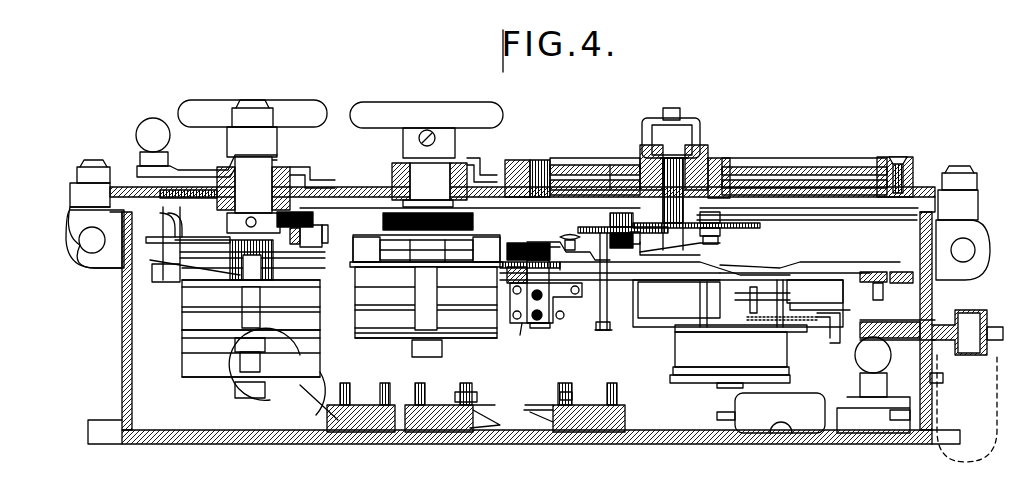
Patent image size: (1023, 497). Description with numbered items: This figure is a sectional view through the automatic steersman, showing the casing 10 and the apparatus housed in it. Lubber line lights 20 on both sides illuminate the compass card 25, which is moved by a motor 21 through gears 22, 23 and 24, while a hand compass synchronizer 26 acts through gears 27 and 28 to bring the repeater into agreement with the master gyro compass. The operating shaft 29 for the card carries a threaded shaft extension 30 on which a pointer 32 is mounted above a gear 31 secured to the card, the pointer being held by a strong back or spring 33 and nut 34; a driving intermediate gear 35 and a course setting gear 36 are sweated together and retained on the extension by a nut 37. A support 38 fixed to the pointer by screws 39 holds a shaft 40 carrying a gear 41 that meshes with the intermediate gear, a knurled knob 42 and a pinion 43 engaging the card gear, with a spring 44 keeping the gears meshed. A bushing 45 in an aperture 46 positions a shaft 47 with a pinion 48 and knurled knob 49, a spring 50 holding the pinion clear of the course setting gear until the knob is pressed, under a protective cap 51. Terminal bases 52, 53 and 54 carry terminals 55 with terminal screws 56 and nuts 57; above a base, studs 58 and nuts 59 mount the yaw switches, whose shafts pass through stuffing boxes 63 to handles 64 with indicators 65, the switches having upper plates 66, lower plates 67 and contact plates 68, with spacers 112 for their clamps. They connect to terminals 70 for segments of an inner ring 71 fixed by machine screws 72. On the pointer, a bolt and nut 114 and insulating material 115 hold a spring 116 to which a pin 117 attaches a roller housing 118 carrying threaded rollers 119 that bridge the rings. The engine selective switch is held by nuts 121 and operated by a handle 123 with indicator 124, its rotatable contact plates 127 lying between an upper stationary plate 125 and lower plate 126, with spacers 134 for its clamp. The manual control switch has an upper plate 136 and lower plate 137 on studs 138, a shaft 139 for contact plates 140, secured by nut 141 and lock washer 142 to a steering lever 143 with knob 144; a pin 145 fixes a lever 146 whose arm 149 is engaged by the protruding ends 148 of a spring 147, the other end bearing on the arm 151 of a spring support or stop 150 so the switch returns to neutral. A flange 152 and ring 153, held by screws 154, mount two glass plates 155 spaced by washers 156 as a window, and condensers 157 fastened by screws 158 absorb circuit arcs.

The casing 10 is at (925, 285).
The lubber line lights 20 is at (882, 368).
The motor 21 is at (788, 350).
The gear 22 is at (818, 295).
The gear 23 is at (772, 305).
The gear 24 is at (772, 296).
The compass card 25 is at (866, 272).
The hand compass synchronizer 26 is at (931, 386).
The gear 27 is at (840, 316).
The gear 28 is at (808, 333).
The operating shaft 29 is at (700, 305).
The shaft extension 30 is at (720, 233).
The gear 31 is at (780, 262).
The pointer 32 is at (833, 262).
The strong back or spring 33 is at (690, 250).
The nut 34 is at (720, 242).
The driving intermediate gear 35 is at (750, 226).
The course setting gear 36 is at (742, 218).
The nut 37 is at (720, 215).
The support 38 is at (603, 240).
The screws 39 is at (642, 247).
The shaft 40 is at (636, 240).
The gear 41 is at (585, 232).
The knurled knob 42 is at (610, 220).
The pinion 43 is at (608, 328).
The spring 44 is at (600, 313).
The bushing 45 is at (700, 158).
The aperture 46 is at (700, 200).
The shaft 47 is at (622, 170).
The pinion 48 is at (598, 168).
The knurled knob 49 is at (671, 138).
The spring 50 is at (690, 150).
The protective cap 51 is at (690, 122).
The terminal base 52 is at (290, 425).
The terminal base 53 is at (490, 423).
The terminal base 54 is at (622, 422).
The terminals 55 is at (495, 412).
The terminal screws 56 is at (468, 386).
The nuts 57 is at (470, 400).
The studs 58 is at (438, 300).
The nuts 59 is at (443, 350).
The stuffing boxes 63 is at (392, 168).
The handles 64 is at (426, 130).
The pointers or indicators 65 is at (474, 170).
The upper plates 66 is at (322, 258).
The lower plates 67 is at (358, 340).
The contact plates 68 is at (426, 275).
The terminals 70 is at (556, 318).
The inner ring 71 is at (895, 272).
The machine screws 72 is at (880, 298).
The spacers 112 is at (322, 242).
The bolt and nut 114 is at (570, 236).
The insulating material 115 is at (543, 328).
The spring 116 is at (532, 242).
The pin 117 is at (520, 243).
The roller housing 118 is at (515, 243).
The threaded rollers 119 is at (520, 323).
The nuts 121 is at (240, 396).
The handle 123 is at (252, 113).
The indicator 124 is at (306, 180).
The upper stationary plate 125 is at (320, 272).
The lower plate 126 is at (190, 380).
The rotatable contact plates 127 is at (234, 355).
The spacers 134 is at (320, 235).
The upper plate 136 is at (182, 287).
The lower plate 137 is at (182, 335).
The studs 138 is at (262, 303).
The shaft 139 is at (248, 278).
The contact plates 140 is at (251, 328).
The nut 141 is at (256, 112).
The lock washer 142 is at (272, 134).
The steering lever 143 is at (228, 158).
The knob 144 is at (136, 127).
The pin 145 is at (252, 216).
The lever 146 is at (228, 216).
The spring 147 is at (272, 278).
The protruding ends 148 is at (150, 260).
The arm 149 is at (145, 280).
The spring support or stop 150 is at (112, 214).
The arm 151 is at (125, 270).
The flange 152 is at (905, 206).
The ring 153 is at (882, 160).
The screws 154 is at (900, 157).
The glass plates 155 is at (806, 178).
The washers 156 is at (540, 162).
The condensers 157 is at (771, 413).
The screws 158 is at (784, 432).